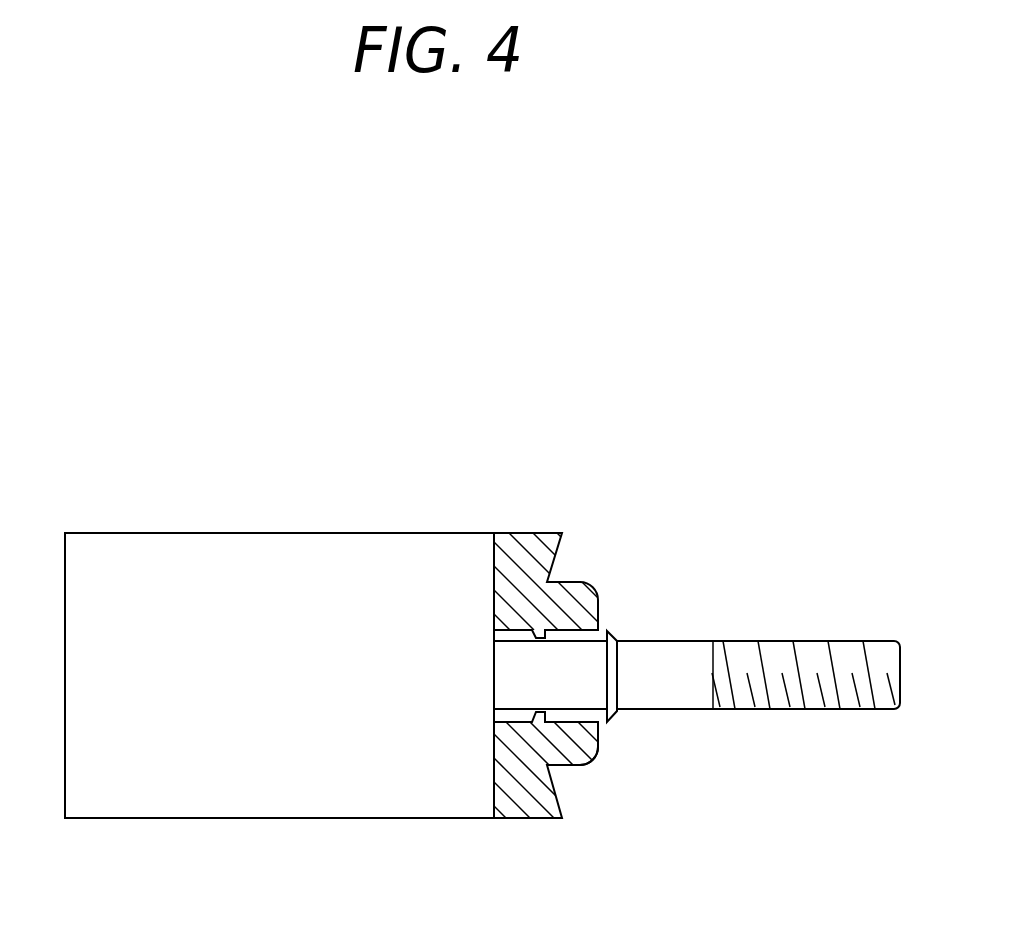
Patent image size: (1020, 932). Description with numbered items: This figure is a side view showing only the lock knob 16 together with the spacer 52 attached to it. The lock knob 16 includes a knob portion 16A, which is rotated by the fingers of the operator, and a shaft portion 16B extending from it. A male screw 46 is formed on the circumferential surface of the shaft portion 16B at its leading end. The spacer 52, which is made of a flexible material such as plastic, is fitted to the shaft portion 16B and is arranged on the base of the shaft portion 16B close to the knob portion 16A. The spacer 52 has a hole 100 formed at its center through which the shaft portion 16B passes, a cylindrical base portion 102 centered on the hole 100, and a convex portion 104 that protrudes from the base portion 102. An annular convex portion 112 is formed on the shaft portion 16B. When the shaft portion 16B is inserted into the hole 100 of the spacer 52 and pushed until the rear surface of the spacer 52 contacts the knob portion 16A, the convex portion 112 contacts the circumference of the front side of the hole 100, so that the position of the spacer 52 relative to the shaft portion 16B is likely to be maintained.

The lock knob 16 is at (482, 624).
The knob portion 16A is at (302, 555).
The shaft portion 16B is at (758, 627).
The male screw 46 is at (811, 650).
The spacer 52 is at (542, 531).
The hole 100 is at (512, 716).
The base portion 102 is at (523, 800).
The convex portion 104 is at (595, 740).
The convex portion 112 is at (611, 638).